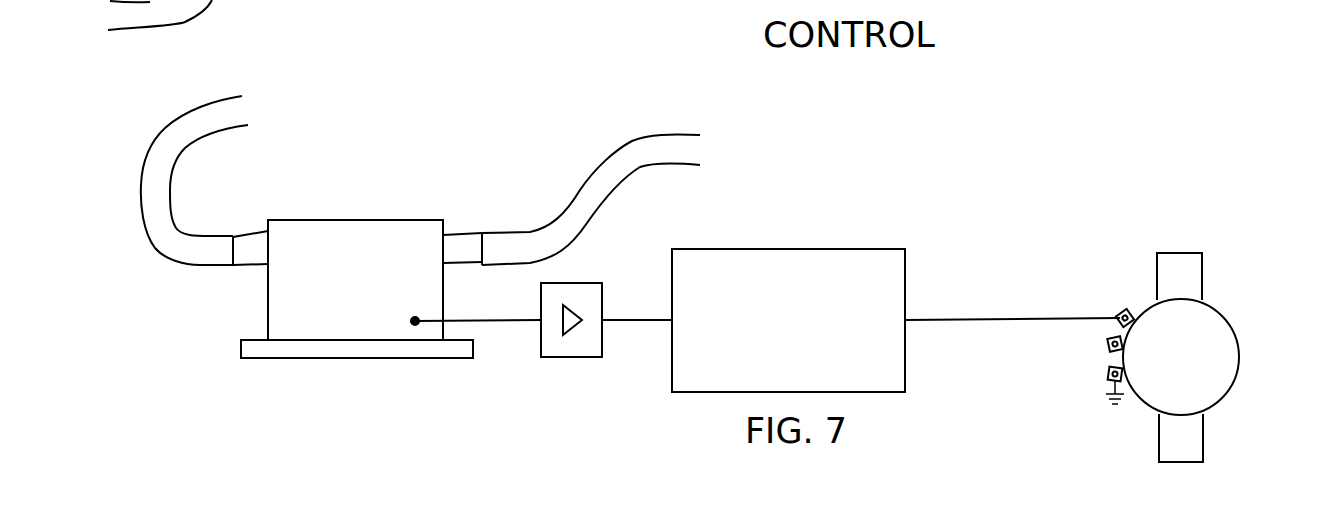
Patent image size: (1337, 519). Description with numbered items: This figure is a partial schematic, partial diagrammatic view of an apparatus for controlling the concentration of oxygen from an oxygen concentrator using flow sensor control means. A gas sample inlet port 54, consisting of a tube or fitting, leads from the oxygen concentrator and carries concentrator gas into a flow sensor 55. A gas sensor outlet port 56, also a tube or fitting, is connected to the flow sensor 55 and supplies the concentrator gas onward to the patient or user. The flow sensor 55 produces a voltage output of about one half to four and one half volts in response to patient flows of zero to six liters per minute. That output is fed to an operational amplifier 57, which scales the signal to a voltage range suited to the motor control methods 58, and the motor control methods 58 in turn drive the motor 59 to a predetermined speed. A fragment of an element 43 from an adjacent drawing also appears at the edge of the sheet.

The component of adjacent figure (partial) 43 is at (180, 23).
The gas sample inlet port 54 is at (200, 140).
The flow sensor 55 is at (377, 218).
The gas sensor outlet port 56 is at (527, 233).
The operational amplifier 57 is at (568, 358).
The motor control methods 58 is at (802, 248).
The motor 59 is at (1241, 352).